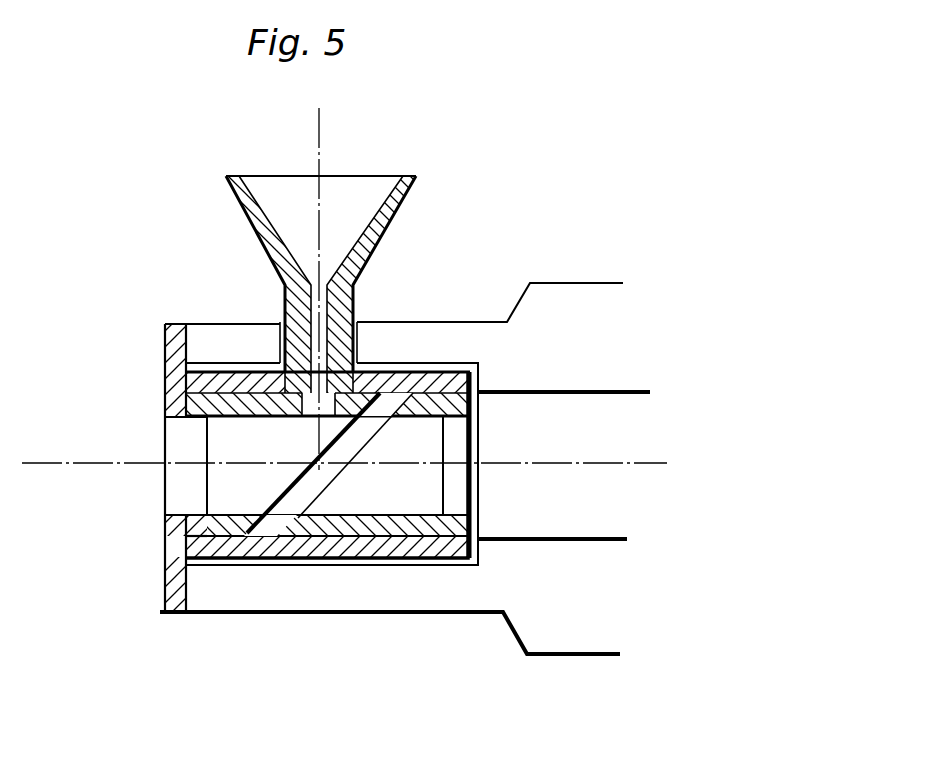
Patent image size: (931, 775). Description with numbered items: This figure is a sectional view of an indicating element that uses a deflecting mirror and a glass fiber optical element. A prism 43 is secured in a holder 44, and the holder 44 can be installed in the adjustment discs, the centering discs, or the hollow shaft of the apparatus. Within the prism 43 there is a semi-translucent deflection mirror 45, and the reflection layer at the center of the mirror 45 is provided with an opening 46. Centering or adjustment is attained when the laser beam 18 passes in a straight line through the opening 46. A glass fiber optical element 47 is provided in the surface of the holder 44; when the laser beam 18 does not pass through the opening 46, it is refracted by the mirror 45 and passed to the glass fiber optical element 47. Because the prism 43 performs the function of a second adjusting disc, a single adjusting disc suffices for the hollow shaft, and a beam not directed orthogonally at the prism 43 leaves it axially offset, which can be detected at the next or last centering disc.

The laser beam 18 is at (72, 463).
The prism 43 is at (421, 495).
The holder 44 is at (208, 550).
The deflection mirror 45 is at (283, 493).
The opening 46 is at (313, 472).
The glass fiber optical element 47 is at (355, 202).